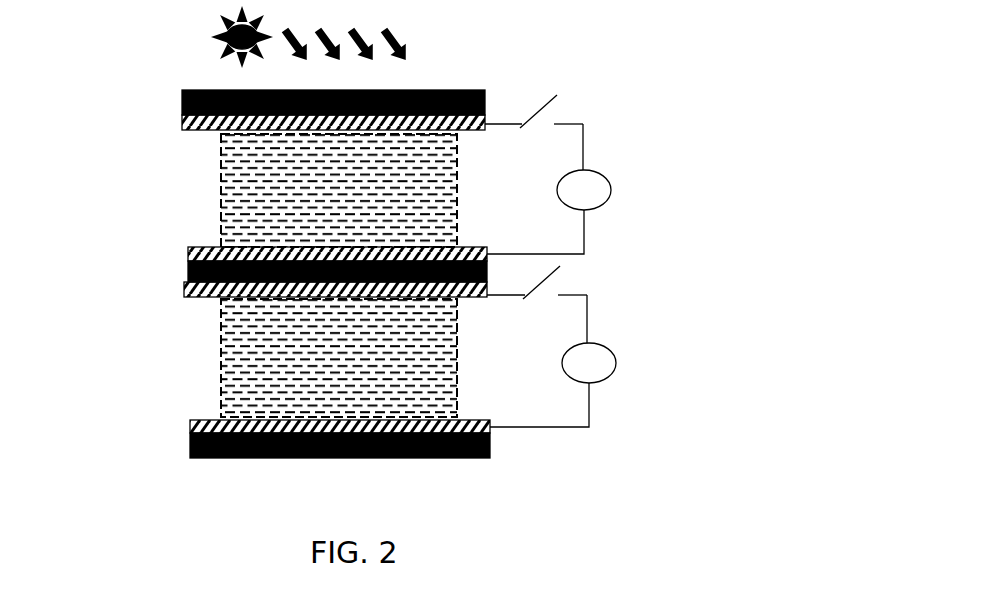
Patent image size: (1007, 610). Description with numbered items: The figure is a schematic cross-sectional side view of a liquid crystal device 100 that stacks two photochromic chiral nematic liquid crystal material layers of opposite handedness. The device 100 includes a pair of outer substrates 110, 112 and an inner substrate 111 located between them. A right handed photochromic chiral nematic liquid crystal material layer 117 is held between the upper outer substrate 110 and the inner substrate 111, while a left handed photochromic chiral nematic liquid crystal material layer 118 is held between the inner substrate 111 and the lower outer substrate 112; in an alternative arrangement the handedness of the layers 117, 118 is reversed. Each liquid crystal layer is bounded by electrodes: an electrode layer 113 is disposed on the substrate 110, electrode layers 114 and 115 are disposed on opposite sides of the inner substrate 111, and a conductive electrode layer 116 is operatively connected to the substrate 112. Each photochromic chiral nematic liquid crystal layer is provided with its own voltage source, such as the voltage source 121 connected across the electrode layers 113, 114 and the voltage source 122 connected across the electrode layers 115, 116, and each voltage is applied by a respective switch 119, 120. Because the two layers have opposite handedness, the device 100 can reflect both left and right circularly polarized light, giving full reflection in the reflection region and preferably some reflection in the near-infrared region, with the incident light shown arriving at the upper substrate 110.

The liquid crystal device 100 is at (167, 57).
The outer substrate 110 is at (180, 100).
The inner substrate 111 is at (186, 276).
The outer substrate 112 is at (188, 452).
The electrode layer 113 is at (180, 125).
The electrode layer 114 is at (186, 255).
The electrode layer 115 is at (183, 293).
The conductive electrode layer 116 is at (188, 427).
The photochromic chiral nematic liquid crystal material layer 117 is at (218, 188).
The photochromic chiral nematic liquid crystal material layer 118 is at (218, 360).
The switch 119 is at (557, 102).
The switch 120 is at (560, 273).
The voltage source 121 is at (620, 190).
The voltage source 122 is at (620, 363).